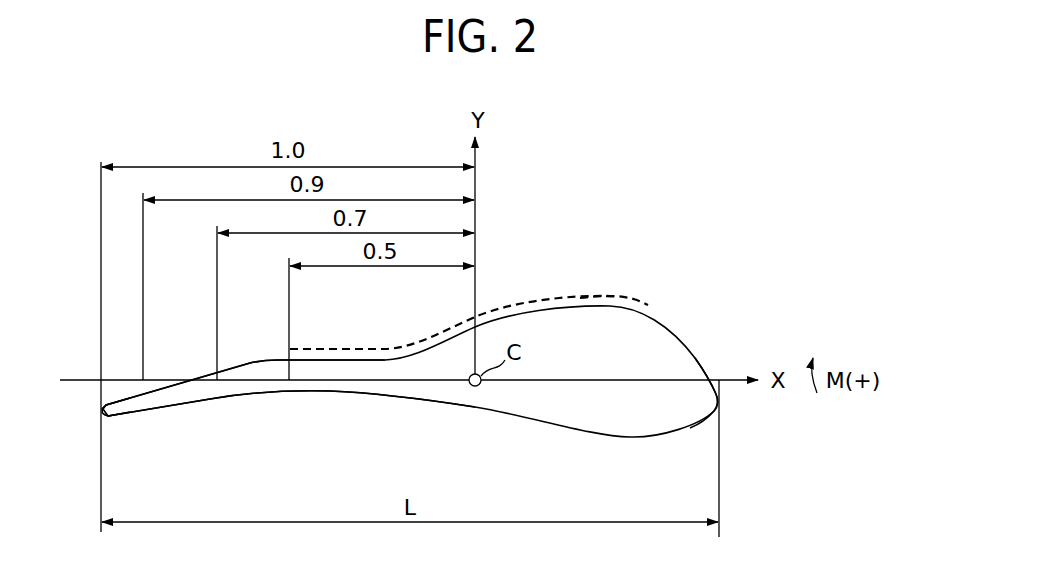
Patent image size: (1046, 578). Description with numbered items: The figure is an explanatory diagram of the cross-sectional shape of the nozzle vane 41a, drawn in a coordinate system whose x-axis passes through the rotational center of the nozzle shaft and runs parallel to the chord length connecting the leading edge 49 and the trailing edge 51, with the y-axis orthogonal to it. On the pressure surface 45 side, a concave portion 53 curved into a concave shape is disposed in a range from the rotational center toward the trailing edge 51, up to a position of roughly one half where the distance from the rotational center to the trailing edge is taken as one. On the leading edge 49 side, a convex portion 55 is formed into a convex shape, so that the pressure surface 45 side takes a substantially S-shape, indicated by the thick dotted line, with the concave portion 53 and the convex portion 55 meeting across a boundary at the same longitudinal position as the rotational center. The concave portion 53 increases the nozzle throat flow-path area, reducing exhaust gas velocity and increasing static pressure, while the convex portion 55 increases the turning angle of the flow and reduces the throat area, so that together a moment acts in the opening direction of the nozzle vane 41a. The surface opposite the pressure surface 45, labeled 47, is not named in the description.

The nozzle vane 41a is at (668, 340).
The pressure surface 45 is at (246, 360).
The pressure surface 47 is at (225, 400).
The leading edge 49 is at (721, 408).
The trailing edge 51 is at (100, 415).
The concave portion 53 is at (391, 348).
The convex portion 55 is at (614, 298).